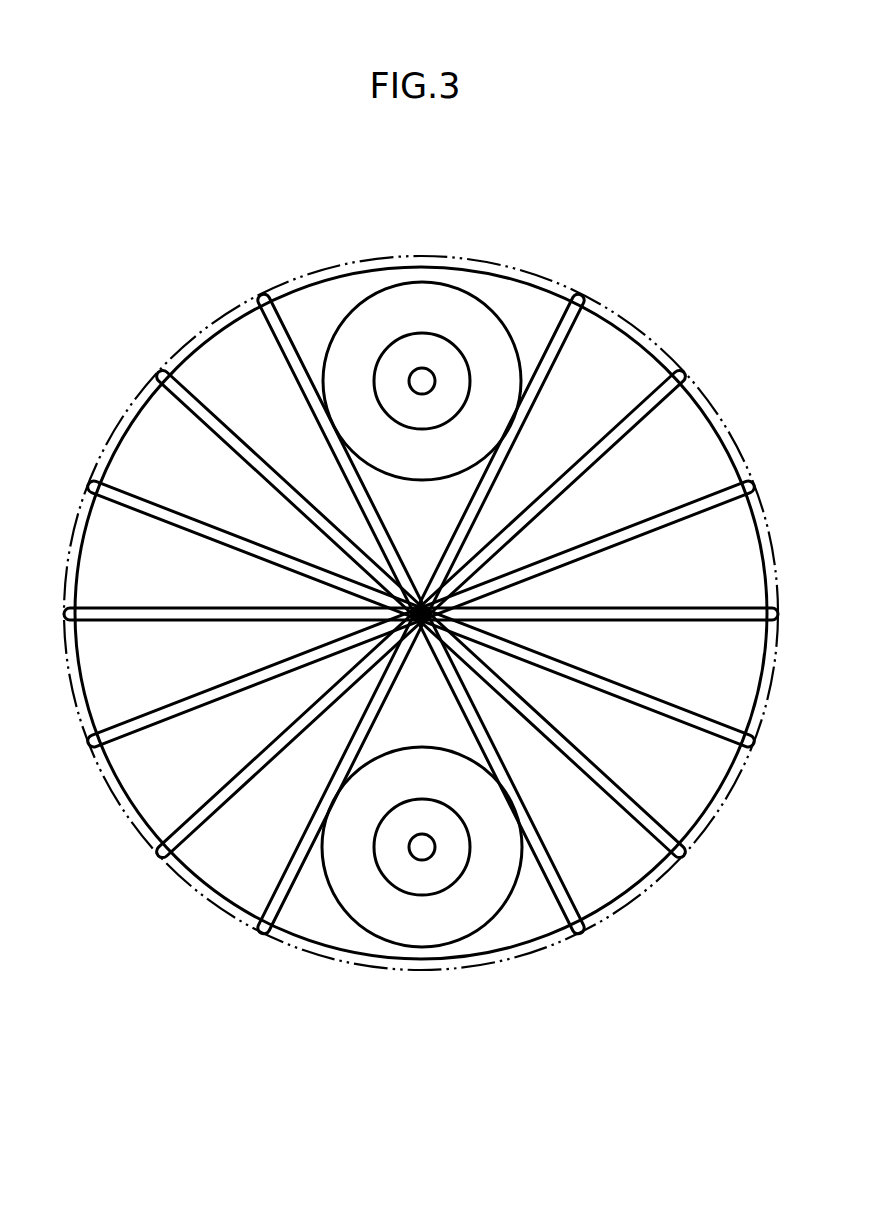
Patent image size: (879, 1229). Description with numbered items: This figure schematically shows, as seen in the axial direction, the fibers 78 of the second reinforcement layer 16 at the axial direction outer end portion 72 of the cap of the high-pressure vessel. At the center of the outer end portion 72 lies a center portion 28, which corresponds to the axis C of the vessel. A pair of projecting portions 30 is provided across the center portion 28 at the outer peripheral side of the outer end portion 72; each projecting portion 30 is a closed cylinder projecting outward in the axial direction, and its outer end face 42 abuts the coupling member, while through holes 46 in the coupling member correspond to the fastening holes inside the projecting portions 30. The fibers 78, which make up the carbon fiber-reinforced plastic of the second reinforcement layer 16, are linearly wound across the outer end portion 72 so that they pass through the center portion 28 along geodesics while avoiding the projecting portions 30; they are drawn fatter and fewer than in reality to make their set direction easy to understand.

The second reinforcement layer 16 is at (315, 268).
The outer end portion 72 is at (535, 312).
The fibers 78 is at (517, 425).
The projecting portions 30 is at (415, 302).
The through holes 46 is at (425, 338).
The outer end faces 42 is at (360, 413).
The center portion 28 is at (422, 620).
The axis C is at (421, 610).